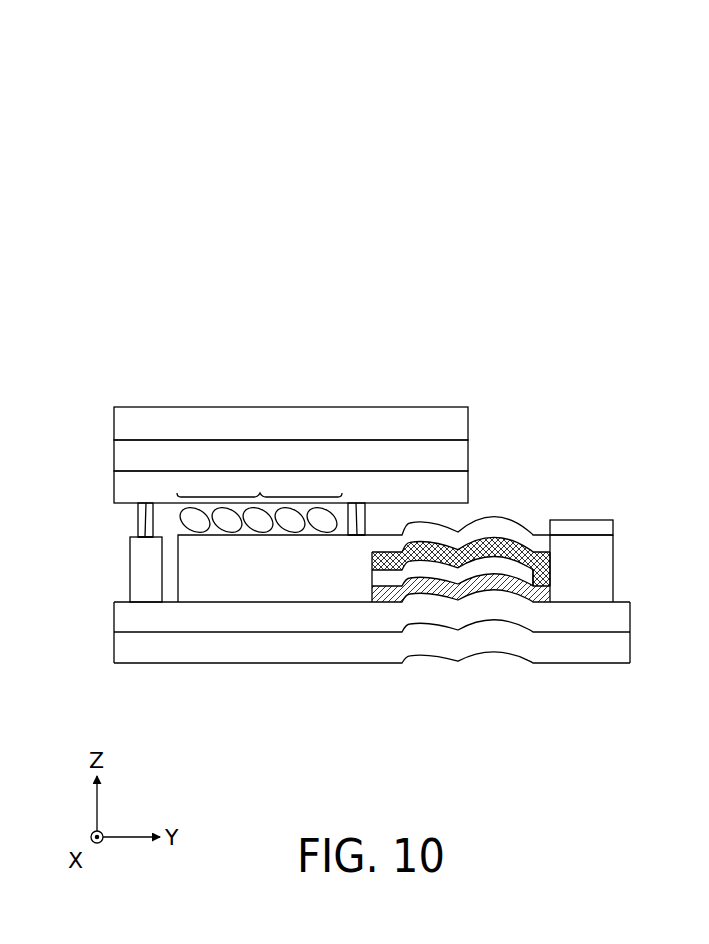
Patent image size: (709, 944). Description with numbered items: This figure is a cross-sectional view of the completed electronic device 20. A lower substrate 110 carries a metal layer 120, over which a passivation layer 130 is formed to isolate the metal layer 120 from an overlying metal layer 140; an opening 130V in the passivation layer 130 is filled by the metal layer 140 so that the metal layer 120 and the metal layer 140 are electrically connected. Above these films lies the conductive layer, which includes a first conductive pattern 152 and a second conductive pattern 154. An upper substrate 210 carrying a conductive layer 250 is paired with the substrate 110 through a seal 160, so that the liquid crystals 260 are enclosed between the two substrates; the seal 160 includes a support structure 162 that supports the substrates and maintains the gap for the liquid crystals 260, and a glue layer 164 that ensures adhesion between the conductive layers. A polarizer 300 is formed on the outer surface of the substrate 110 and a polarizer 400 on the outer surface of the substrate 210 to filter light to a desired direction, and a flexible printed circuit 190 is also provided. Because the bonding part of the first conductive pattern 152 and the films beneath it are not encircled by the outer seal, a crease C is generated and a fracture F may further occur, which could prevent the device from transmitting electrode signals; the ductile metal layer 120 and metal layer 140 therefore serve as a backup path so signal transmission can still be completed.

The electronic device 20 is at (116, 132).
The substrate 110 is at (628, 617).
The metal layer 120 is at (380, 600).
The passivation layer 130 is at (433, 572).
The opening 130V is at (552, 576).
The metal layer 140 is at (505, 540).
The first conductive pattern 152 is at (268, 584).
The second conductive pattern 154 is at (148, 585).
The seal 160 is at (367, 327).
The support structure 162 is at (355, 540).
The glue layer 164 is at (138, 516).
The flexible printed circuit 190 is at (614, 527).
The substrate 210 is at (122, 457).
The conductive layer 250 is at (122, 490).
The liquid crystals 260 is at (260, 489).
The polarizer 300 is at (628, 650).
The polarizer 400 is at (122, 425).
The fracture F is at (492, 527).
The crease C is at (494, 668).